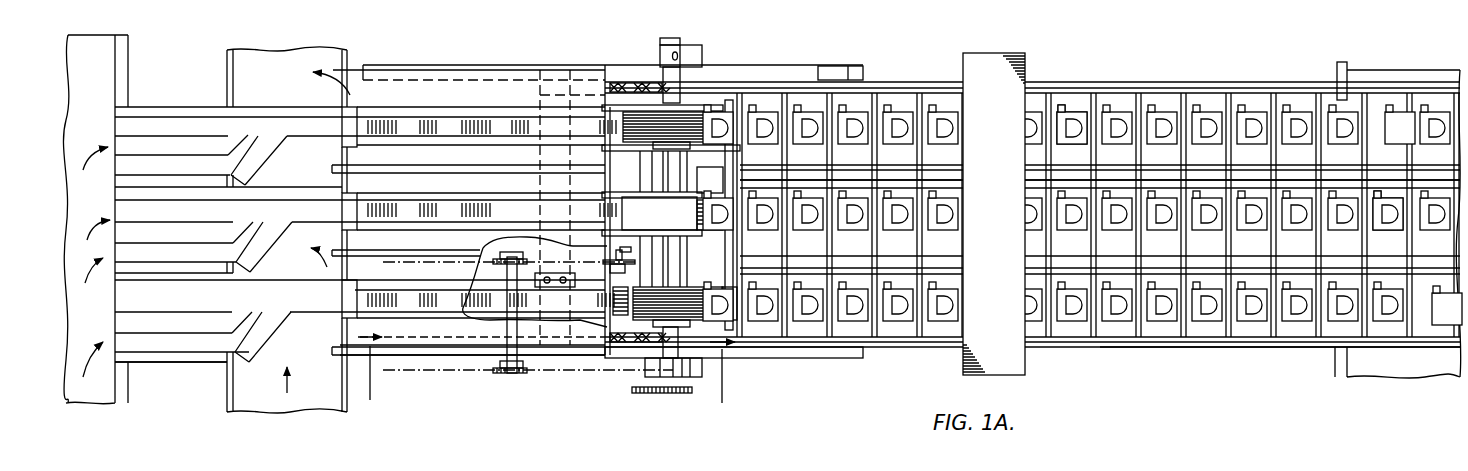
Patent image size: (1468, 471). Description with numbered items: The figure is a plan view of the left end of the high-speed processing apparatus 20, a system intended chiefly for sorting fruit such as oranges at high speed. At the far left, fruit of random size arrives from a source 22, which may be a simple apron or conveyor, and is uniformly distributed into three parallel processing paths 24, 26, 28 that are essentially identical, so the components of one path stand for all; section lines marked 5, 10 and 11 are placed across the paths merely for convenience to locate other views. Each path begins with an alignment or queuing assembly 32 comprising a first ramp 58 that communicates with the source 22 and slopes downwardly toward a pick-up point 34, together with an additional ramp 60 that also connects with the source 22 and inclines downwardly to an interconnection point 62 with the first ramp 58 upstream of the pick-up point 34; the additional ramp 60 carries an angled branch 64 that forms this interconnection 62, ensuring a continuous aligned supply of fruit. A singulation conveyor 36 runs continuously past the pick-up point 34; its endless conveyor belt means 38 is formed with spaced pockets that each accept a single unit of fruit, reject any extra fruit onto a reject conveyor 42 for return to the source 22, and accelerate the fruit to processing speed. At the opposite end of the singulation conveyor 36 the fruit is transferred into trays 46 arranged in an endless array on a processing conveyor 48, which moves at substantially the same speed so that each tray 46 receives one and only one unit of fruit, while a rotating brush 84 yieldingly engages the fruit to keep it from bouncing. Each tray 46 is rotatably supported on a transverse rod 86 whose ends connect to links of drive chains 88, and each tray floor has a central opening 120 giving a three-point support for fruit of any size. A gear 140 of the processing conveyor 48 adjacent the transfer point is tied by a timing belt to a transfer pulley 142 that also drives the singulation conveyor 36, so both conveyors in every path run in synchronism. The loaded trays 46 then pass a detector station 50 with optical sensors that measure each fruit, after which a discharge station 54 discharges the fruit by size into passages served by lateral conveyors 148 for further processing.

The high-speed processing apparatus 20 is at (1179, 68).
The source 22 is at (112, 60).
The processing path 24 is at (1298, 321).
The processing path 26 is at (1392, 202).
The processing path 28 is at (1089, 112).
The alignment or queuing assembly 32 is at (188, 360).
The pick-up point 34 is at (395, 288).
The singulation conveyor 36 is at (450, 358).
The endless conveyor belt means 38 is at (478, 114).
The reject conveyor 42 is at (265, 410).
The trays 46 is at (806, 116).
The processing conveyor 48 is at (892, 360).
The detector station 50 is at (963, 369).
The discharge station 54 is at (1420, 58).
The first ramp 58 is at (214, 301).
The additional ramp 60 is at (187, 348).
The interconnection point 62 is at (266, 309).
The angled branch 64 is at (246, 328).
The rotating brush 84 is at (698, 300).
The transverse rod 86 is at (906, 98).
The drive chains 88 is at (1247, 349).
The central opening 120 is at (1031, 217).
The gear 140 is at (630, 344).
The transfer pulley 142 is at (512, 374).
The lateral conveyors 148 is at (1423, 372).
The section line 10 is at (302, 104).
The section line 11 is at (550, 185).
The section line 5 is at (546, 372).